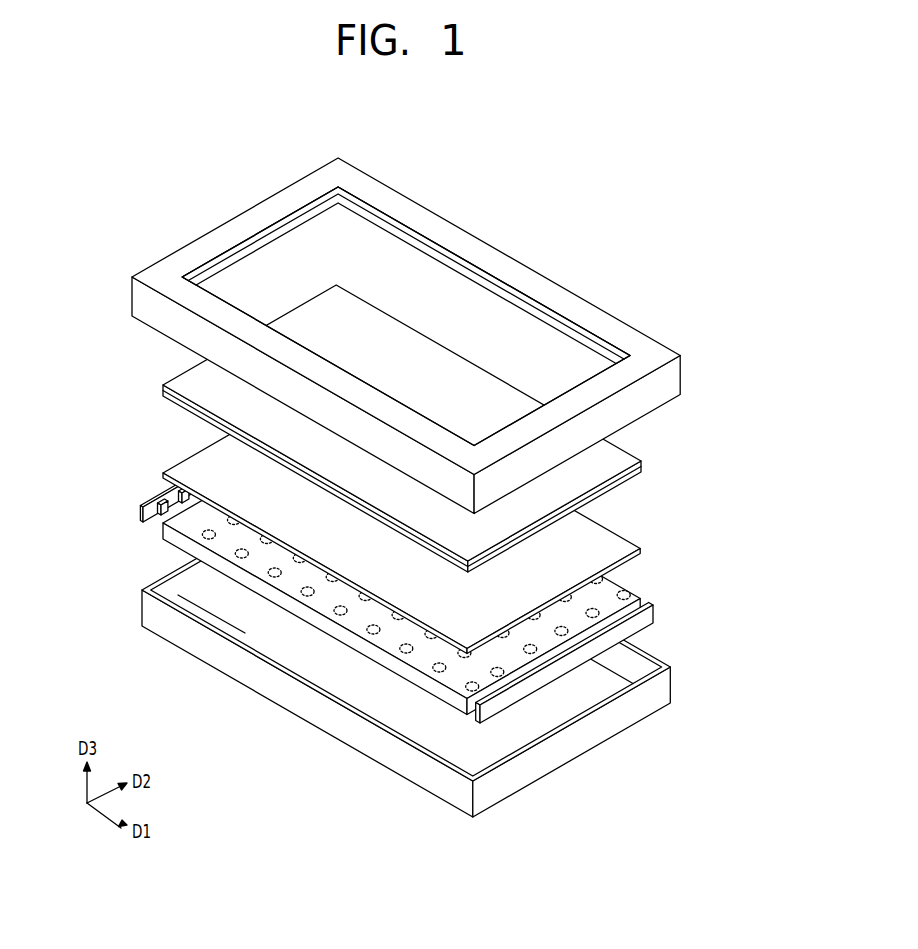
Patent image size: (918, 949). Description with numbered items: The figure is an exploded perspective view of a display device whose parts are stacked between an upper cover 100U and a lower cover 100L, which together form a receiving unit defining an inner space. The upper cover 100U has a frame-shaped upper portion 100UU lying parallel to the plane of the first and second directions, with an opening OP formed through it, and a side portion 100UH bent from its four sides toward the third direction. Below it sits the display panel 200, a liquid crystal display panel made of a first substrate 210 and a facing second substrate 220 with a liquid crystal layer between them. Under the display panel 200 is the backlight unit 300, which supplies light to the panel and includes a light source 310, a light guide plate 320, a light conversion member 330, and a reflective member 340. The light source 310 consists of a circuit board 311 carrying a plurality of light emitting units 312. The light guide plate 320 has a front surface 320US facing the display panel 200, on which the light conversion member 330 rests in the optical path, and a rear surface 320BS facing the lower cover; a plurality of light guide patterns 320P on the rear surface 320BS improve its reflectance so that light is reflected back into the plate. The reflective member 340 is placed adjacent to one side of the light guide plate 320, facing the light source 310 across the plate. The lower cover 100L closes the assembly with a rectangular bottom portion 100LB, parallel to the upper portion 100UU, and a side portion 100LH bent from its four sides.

The upper cover 100U is at (438, 336).
The upper portion 100UU is at (637, 340).
The side portion 100UH is at (667, 387).
The opening OP is at (462, 312).
The display panel 200 is at (458, 428).
The second substrate 220 is at (612, 457).
The first substrate 210 is at (641, 470).
The backlight unit 300 is at (375, 580).
The light source 310 is at (121, 499).
The light emitting units 312 is at (150, 497).
The circuit board 311 is at (150, 514).
The light conversion member 330 is at (610, 548).
The light guide plate 320 is at (433, 605).
The front surface 320US is at (370, 613).
The rear surface 320BS is at (263, 593).
The light guide patterns 320P is at (407, 657).
The reflective member 340 is at (652, 617).
The lower cover 100L is at (429, 649).
The side portion 100LH is at (607, 723).
The bottom portion 100LB is at (512, 726).